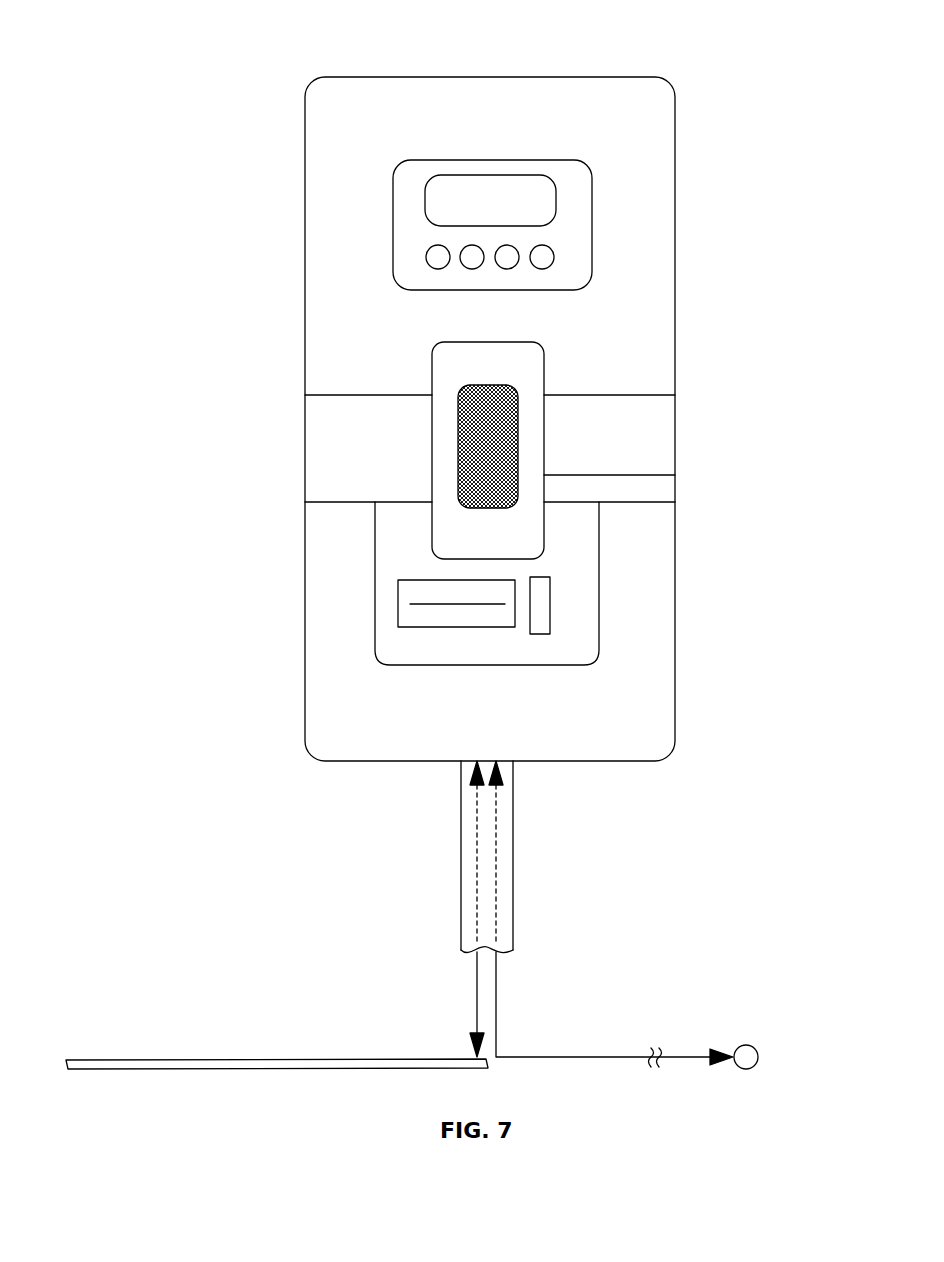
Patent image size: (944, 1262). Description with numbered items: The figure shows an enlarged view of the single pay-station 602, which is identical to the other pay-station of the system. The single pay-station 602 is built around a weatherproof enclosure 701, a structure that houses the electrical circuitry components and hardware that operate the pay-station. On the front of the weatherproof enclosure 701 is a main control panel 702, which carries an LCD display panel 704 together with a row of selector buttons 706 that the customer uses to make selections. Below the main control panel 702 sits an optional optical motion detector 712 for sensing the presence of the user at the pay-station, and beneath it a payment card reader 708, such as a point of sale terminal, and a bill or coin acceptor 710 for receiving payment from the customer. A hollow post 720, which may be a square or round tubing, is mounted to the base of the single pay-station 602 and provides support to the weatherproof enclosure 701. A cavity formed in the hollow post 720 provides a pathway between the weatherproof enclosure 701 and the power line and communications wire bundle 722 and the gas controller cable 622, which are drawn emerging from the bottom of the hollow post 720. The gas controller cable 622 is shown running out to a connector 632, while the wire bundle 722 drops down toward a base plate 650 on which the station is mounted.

The single pay-station 602 is at (460, 33).
The weatherproof enclosure 701 is at (675, 217).
The main control panel 702 is at (578, 178).
The LCD display panel 704 is at (442, 190).
The selector buttons 706 is at (426, 258).
The payment card reader 708 is at (403, 617).
The bill or coin acceptor 710 is at (548, 603).
The optical motion detector 712 is at (533, 438).
The hollow post 720 is at (575, 862).
The power line and communications wire bundle 722 is at (475, 988).
The gas controller cable 622 is at (500, 1015).
The connector 632 is at (755, 1048).
The substrate 650 is at (287, 1069).